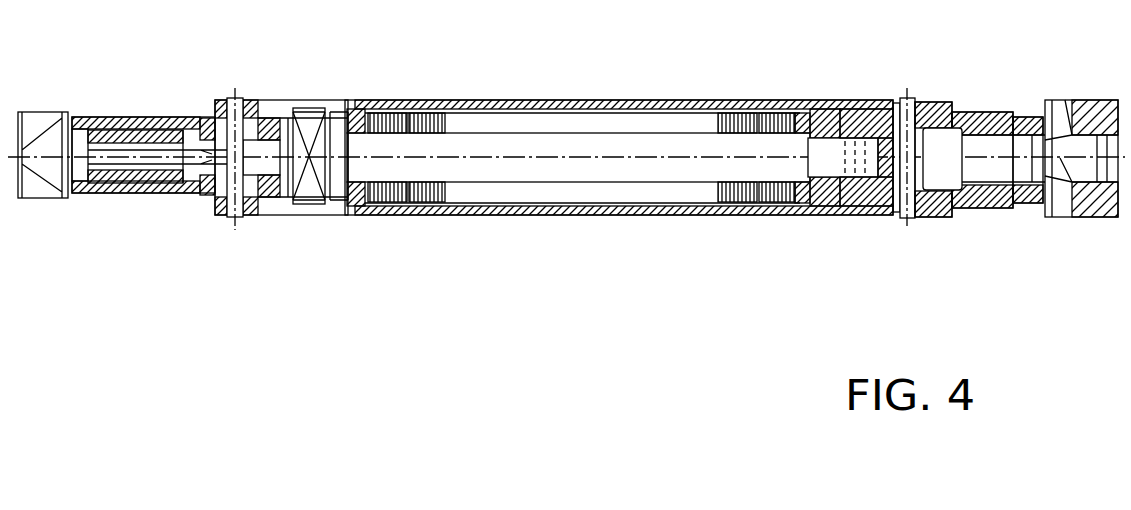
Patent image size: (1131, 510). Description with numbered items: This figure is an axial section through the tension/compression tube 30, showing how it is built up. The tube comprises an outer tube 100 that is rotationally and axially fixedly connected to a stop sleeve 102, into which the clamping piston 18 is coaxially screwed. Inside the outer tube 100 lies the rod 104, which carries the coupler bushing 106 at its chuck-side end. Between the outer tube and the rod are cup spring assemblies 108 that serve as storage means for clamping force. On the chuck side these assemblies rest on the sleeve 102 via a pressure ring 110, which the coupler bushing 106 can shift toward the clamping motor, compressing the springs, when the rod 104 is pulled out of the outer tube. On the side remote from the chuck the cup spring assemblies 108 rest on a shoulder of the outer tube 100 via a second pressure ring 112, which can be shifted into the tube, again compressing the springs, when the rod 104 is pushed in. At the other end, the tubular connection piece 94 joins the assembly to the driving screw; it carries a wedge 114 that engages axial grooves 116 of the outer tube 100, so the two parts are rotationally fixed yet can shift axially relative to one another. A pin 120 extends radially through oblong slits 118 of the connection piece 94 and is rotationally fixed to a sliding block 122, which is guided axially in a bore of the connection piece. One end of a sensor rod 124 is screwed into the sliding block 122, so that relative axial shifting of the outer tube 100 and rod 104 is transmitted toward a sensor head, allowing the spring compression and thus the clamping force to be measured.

The tension/compression tube 30 is at (585, 87).
The tubular connection piece 94 is at (123, 117).
The sensor rod 124 is at (118, 182).
The sliding block 122 is at (197, 117).
The axial grooves 116 is at (277, 103).
The pin 120 is at (214, 208).
The oblong slits 118 is at (249, 215).
The wedge 114 is at (308, 192).
The outer tube 100 is at (701, 99).
The second pressure ring 112 is at (357, 107).
The rod 104 is at (507, 170).
The cup spring assemblies 108 is at (778, 210).
The pressure ring 110 is at (806, 104).
The coupler bushing 106 is at (831, 108).
The stop sleeve 102 is at (937, 101).
The clamping piston 18 is at (1057, 100).